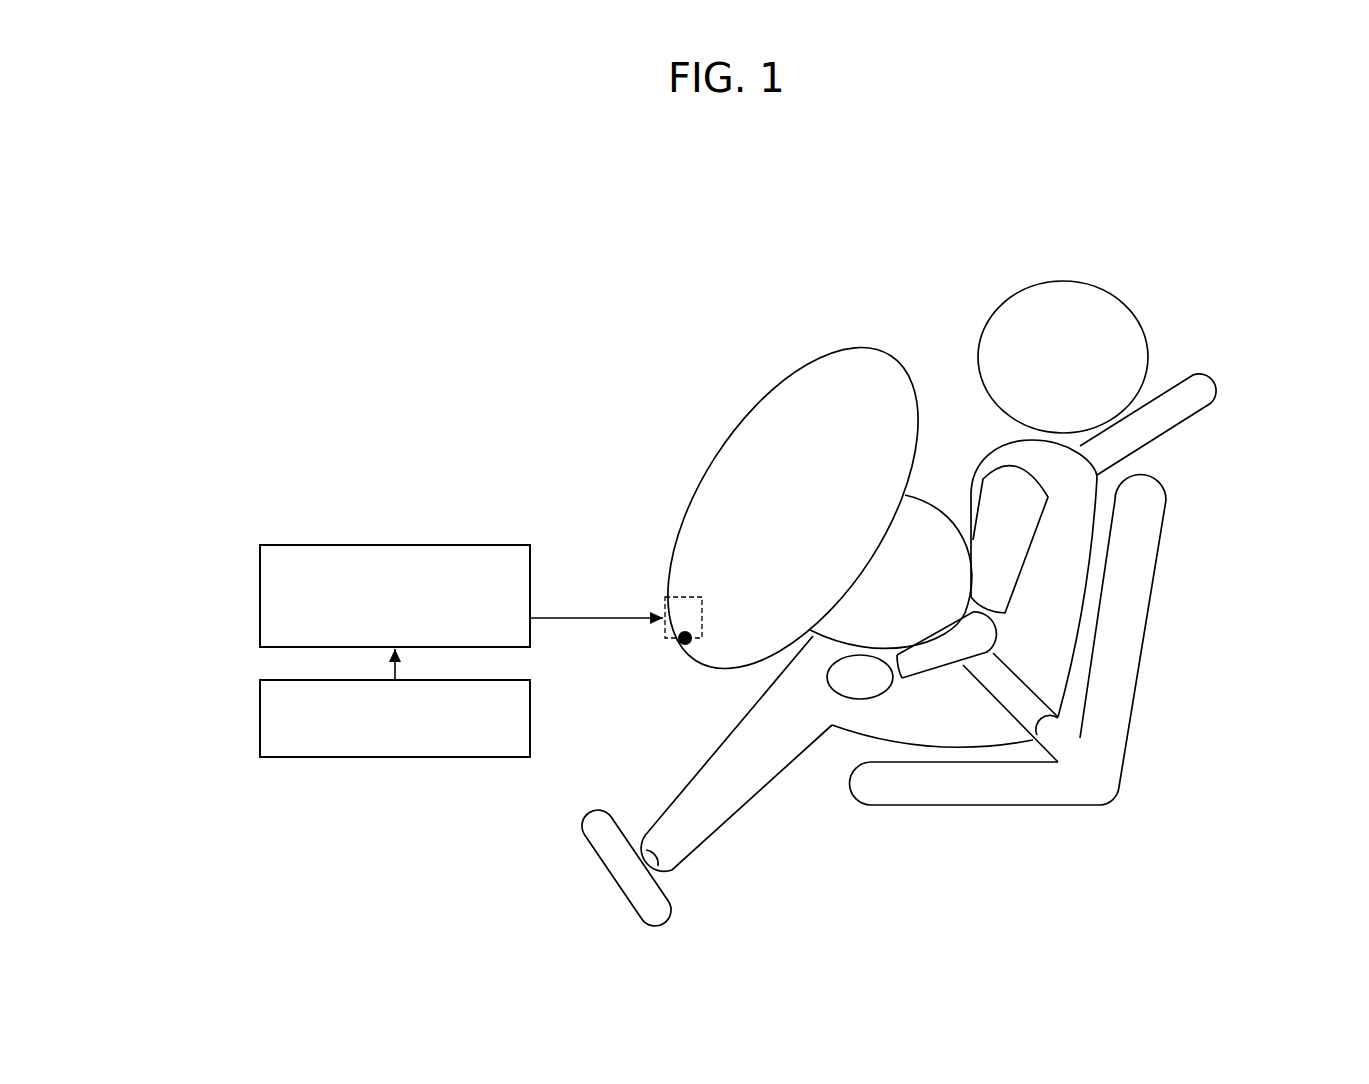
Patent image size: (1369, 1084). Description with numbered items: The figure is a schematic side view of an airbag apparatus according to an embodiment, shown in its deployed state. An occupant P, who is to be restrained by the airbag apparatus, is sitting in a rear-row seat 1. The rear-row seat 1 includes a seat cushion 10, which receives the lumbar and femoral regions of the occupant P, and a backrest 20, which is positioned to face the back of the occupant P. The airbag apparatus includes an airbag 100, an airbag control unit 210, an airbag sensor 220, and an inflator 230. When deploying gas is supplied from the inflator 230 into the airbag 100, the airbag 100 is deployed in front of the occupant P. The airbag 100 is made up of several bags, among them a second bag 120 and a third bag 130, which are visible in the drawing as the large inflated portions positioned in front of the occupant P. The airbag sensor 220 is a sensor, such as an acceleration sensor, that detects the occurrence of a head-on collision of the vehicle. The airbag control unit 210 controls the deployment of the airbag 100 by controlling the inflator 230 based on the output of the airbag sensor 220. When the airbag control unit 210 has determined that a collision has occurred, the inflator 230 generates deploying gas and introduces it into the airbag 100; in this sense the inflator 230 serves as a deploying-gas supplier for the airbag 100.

The rear-row seat 1 is at (1140, 810).
The seat cushion 10 is at (958, 815).
The backrest 20 is at (1140, 603).
The airbag 100 is at (715, 380).
The second bag 120 is at (773, 388).
The third bag 130 is at (927, 508).
The airbag control unit 210 is at (260, 565).
The airbag sensor 220 is at (260, 702).
The inflator 230 is at (688, 645).
The occupant P is at (1055, 265).